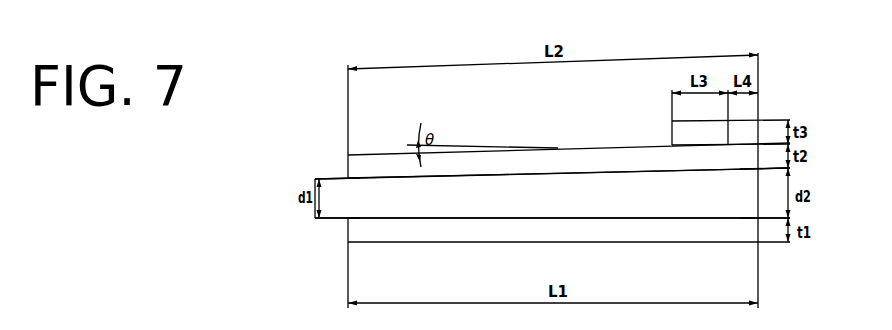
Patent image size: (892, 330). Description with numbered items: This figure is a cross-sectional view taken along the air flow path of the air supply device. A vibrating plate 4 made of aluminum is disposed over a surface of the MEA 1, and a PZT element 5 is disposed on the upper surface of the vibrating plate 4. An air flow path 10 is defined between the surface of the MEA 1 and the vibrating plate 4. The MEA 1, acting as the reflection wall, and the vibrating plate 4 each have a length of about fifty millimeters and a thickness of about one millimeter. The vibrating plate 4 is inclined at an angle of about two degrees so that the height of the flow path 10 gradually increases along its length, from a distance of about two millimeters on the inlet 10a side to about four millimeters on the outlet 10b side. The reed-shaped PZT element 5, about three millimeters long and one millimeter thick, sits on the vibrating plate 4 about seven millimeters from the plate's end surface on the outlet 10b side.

The MEA 1 is at (653, 235).
The vibrating plate 4 is at (594, 150).
The PZT element 5 is at (672, 135).
The air flow path 10 is at (583, 203).
The inlet 10a is at (368, 208).
The outlet 10b is at (742, 205).